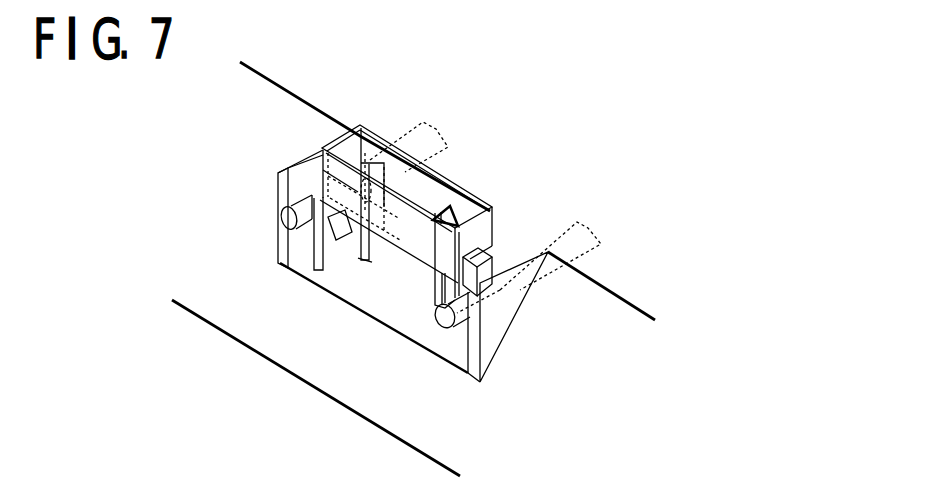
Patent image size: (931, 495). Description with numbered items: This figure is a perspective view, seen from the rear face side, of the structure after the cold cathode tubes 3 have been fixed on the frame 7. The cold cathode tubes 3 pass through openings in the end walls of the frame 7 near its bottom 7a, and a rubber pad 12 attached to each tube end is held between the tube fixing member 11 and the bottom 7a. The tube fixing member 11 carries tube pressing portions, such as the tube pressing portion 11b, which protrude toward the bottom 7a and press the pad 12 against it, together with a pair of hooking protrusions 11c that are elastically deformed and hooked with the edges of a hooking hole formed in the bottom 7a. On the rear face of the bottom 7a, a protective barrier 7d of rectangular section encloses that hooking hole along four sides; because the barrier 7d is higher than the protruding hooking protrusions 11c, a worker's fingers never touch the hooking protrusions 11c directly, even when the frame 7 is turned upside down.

The cold cathode tube 3 is at (305, 208).
The frame 7 is at (202, 295).
The bottom 7a is at (620, 273).
The protective barrier 7d is at (427, 185).
The tube fixing member 11 is at (387, 313).
The tube pressing portion 11b is at (305, 248).
The hooking protrusion 11c is at (452, 220).
The pad 12 is at (312, 137).